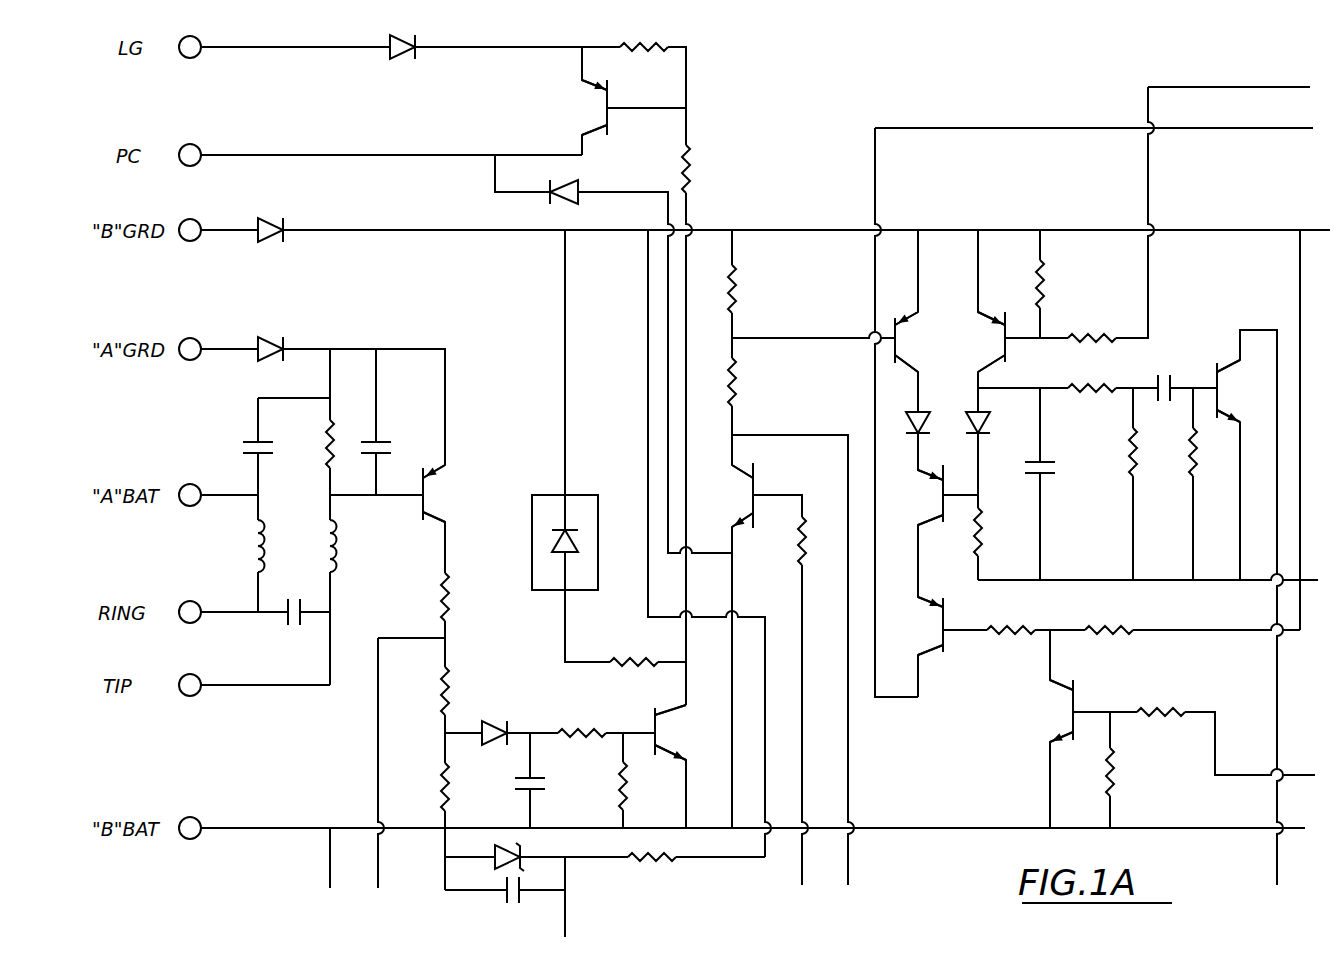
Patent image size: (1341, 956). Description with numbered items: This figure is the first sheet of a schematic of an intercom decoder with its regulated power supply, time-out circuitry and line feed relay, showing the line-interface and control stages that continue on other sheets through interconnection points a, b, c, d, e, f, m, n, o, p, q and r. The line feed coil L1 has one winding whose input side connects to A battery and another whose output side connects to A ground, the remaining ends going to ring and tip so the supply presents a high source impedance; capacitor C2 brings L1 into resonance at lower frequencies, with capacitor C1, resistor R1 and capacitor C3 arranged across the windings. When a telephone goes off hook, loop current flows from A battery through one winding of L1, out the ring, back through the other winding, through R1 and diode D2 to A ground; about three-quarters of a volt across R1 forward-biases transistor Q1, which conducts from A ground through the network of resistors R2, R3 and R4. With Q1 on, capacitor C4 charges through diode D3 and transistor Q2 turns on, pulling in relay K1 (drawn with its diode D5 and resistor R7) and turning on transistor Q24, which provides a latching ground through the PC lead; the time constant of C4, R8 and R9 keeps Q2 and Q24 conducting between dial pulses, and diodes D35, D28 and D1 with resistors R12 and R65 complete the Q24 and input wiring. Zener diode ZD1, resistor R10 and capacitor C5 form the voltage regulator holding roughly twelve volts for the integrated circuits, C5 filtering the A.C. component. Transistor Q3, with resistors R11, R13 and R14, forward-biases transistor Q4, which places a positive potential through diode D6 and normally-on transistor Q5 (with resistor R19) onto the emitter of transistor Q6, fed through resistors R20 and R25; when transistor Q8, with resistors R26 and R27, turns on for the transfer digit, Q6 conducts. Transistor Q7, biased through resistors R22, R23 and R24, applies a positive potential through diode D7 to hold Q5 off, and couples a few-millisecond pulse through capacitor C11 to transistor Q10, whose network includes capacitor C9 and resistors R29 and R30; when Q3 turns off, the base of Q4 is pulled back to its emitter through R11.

The diode D35 is at (425, 36).
The resistor 10K R12 is at (637, 33).
The transistor Q24 is at (571, 107).
The resistor 2.2K R65 is at (712, 170).
The diode D28 is at (585, 187).
The diode D1 is at (272, 217).
The diode D2 is at (275, 336).
The capacitor .22MF C1 is at (280, 441).
The resistor R1 is at (349, 432).
The capacitor 1MF C3 is at (394, 443).
The transistor Q1 is at (447, 493).
The line feed coil L1 is at (299, 543).
The capacitor C2 is at (272, 627).
The resistor R2 is at (468, 596).
The resistor R3 is at (468, 691).
The resistor R4 is at (468, 785).
The diode D3 is at (502, 725).
The resistor R8 is at (574, 721).
The capacitor C4 is at (554, 784).
The resistor R9 is at (642, 786).
The transistor Q2 is at (676, 734).
The resistor 150 ohm R7 is at (625, 648).
The relay K1 is at (546, 522).
The diode D5 is at (574, 556).
The resistor R11 is at (756, 291).
The resistor 4.7K R13 is at (757, 385).
The transistor Q3 is at (732, 496).
The resistor 5.1K R14 is at (825, 541).
The zener diode ZD1 is at (489, 850).
The resistor R10 is at (657, 870).
The capacitor C5 is at (513, 901).
The transistor Q4 is at (911, 342).
The transistor Q7 is at (984, 342).
The resistor 10K R22 is at (1062, 281).
The resistor 4.7K R23 is at (1095, 327).
The diode D6 is at (908, 410).
The diode D7 is at (993, 414).
The resistor 10K R24 is at (1084, 377).
The capacitor C11 is at (1179, 370).
The transistor Q10 is at (1240, 392).
The capacitor .01MF C9 is at (1066, 462).
The resistor 10K R29 is at (1152, 452).
The resistor 20K R30 is at (1212, 452).
The transistor Q5 is at (921, 495).
The resistor 10K R19 is at (1000, 531).
The transistor Q6 is at (922, 626).
The resistor 10K R20 is at (1002, 619).
The resistor 10K R25 is at (1119, 619).
The transistor Q8 is at (1038, 712).
The resistor 5.1K R26 is at (1150, 703).
The resistor 10K R27 is at (1130, 772).
The terminal a is at (321, 862).
The terminal b is at (371, 865).
The terminal c is at (574, 922).
The terminal d is at (794, 866).
The terminal e is at (856, 866).
The terminal f is at (1286, 866).
The terminal m is at (1282, 75).
The terminal n is at (1281, 117).
The terminal o is at (1315, 244).
The terminal p is at (1308, 584).
The terminal q is at (1300, 761).
The terminal r is at (1302, 828).